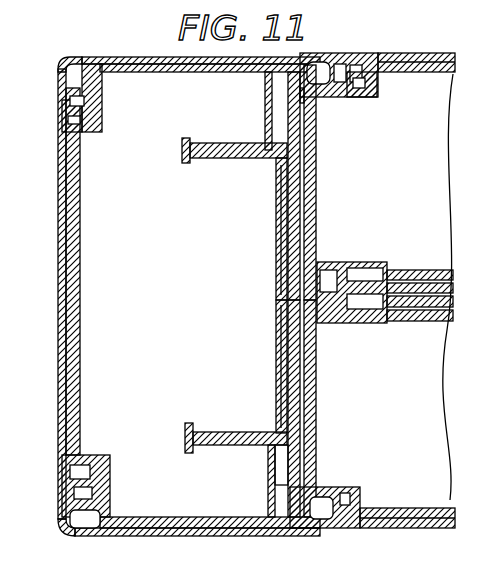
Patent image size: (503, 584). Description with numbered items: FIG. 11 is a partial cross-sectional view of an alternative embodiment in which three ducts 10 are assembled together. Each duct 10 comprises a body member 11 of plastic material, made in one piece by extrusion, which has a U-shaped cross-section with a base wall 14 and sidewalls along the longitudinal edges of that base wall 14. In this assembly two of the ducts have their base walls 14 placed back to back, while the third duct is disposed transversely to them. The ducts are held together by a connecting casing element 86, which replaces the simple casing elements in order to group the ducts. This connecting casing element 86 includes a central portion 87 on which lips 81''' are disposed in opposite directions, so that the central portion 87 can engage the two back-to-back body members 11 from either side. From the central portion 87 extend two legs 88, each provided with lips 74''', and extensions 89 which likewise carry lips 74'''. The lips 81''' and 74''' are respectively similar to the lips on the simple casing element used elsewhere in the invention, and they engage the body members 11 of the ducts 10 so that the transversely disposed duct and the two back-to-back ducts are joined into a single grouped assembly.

The duct 10 is at (455, 66).
The body member 11 is at (437, 266).
The base wall 14 is at (412, 266).
The lips 74''' is at (223, 296).
The lips 81''' is at (352, 300).
The connecting casing element 86 is at (313, 203).
The central portion 87 is at (312, 396).
The legs 88 is at (198, 57).
The extensions 89 is at (322, 55).